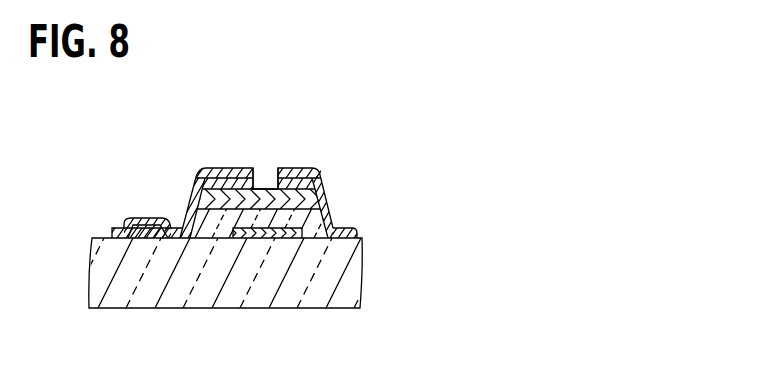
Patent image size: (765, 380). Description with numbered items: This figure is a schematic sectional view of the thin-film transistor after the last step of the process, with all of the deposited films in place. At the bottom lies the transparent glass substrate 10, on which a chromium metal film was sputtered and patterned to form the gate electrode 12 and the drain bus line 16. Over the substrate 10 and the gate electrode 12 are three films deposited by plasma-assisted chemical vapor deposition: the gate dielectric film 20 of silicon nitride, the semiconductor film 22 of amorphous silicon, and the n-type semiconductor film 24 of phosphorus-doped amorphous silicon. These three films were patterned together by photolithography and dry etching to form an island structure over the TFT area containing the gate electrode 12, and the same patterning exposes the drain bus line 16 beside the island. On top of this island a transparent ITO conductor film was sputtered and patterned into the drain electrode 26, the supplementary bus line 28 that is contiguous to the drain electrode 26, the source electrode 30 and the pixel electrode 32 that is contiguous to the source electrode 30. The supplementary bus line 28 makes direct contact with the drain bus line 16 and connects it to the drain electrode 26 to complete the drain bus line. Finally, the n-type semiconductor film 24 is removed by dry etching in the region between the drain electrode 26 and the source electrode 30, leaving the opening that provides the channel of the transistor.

The transparent glass substrate 10 is at (335, 285).
The gate electrode 12 is at (263, 238).
The drain bus line 16 is at (147, 238).
The gate dielectric film 20 is at (337, 212).
The semiconductor film 22 is at (332, 192).
The n-type semiconductor film 24 is at (323, 172).
The drain electrode 26 is at (240, 172).
The supplementary bus line 28 is at (144, 218).
The source electrode 30 is at (298, 172).
The pixel electrode 32 is at (333, 233).